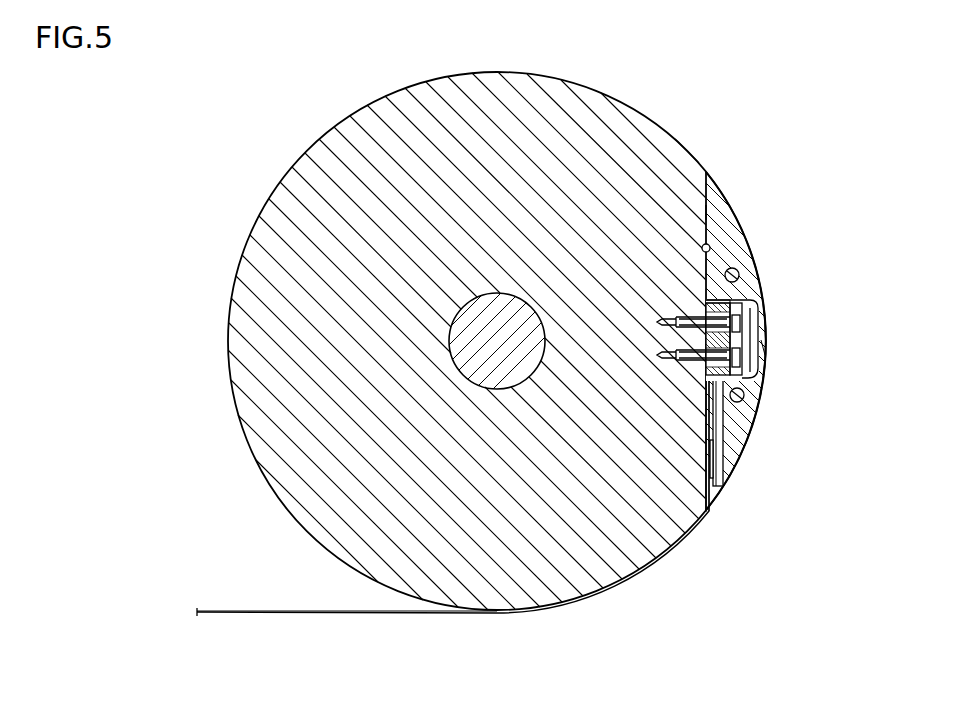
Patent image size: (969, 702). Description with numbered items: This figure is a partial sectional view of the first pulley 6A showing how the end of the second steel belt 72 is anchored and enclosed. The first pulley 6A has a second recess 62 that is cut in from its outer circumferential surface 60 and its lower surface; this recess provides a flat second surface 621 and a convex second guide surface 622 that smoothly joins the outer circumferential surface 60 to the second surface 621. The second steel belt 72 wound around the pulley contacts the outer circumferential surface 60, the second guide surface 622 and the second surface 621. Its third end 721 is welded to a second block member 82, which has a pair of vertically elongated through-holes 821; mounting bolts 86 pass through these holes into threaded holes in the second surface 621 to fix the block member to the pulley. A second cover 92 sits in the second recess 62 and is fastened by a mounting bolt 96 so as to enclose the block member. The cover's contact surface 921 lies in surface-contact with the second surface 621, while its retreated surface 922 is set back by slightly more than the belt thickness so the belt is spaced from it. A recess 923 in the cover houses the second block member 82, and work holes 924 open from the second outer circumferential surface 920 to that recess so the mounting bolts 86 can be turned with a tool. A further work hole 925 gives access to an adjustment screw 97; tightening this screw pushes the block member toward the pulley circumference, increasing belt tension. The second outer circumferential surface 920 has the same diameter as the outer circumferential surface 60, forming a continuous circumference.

The first pulley 6A is at (268, 329).
The outer circumferential surface 60 is at (688, 145).
The second recess 62 is at (712, 197).
The second outer circumferential surface 920 is at (736, 218).
The second cover 92 is at (740, 244).
The mounting bolt 96 is at (741, 276).
The second block member 82 is at (740, 300).
The through-holes 821 is at (741, 328).
The work holes 924 is at (768, 352).
The mounting bolts 86 is at (744, 364).
The contact surface 921 is at (706, 212).
The second surface 621 is at (704, 248).
The recess 923 is at (730, 304).
The third end 721 is at (705, 376).
The retreated surface 922 is at (706, 445).
The work hole 925 is at (724, 472).
The adjustment screw 97 is at (721, 490).
The second guide surface 622 is at (708, 518).
The second steel belt 72 is at (305, 614).